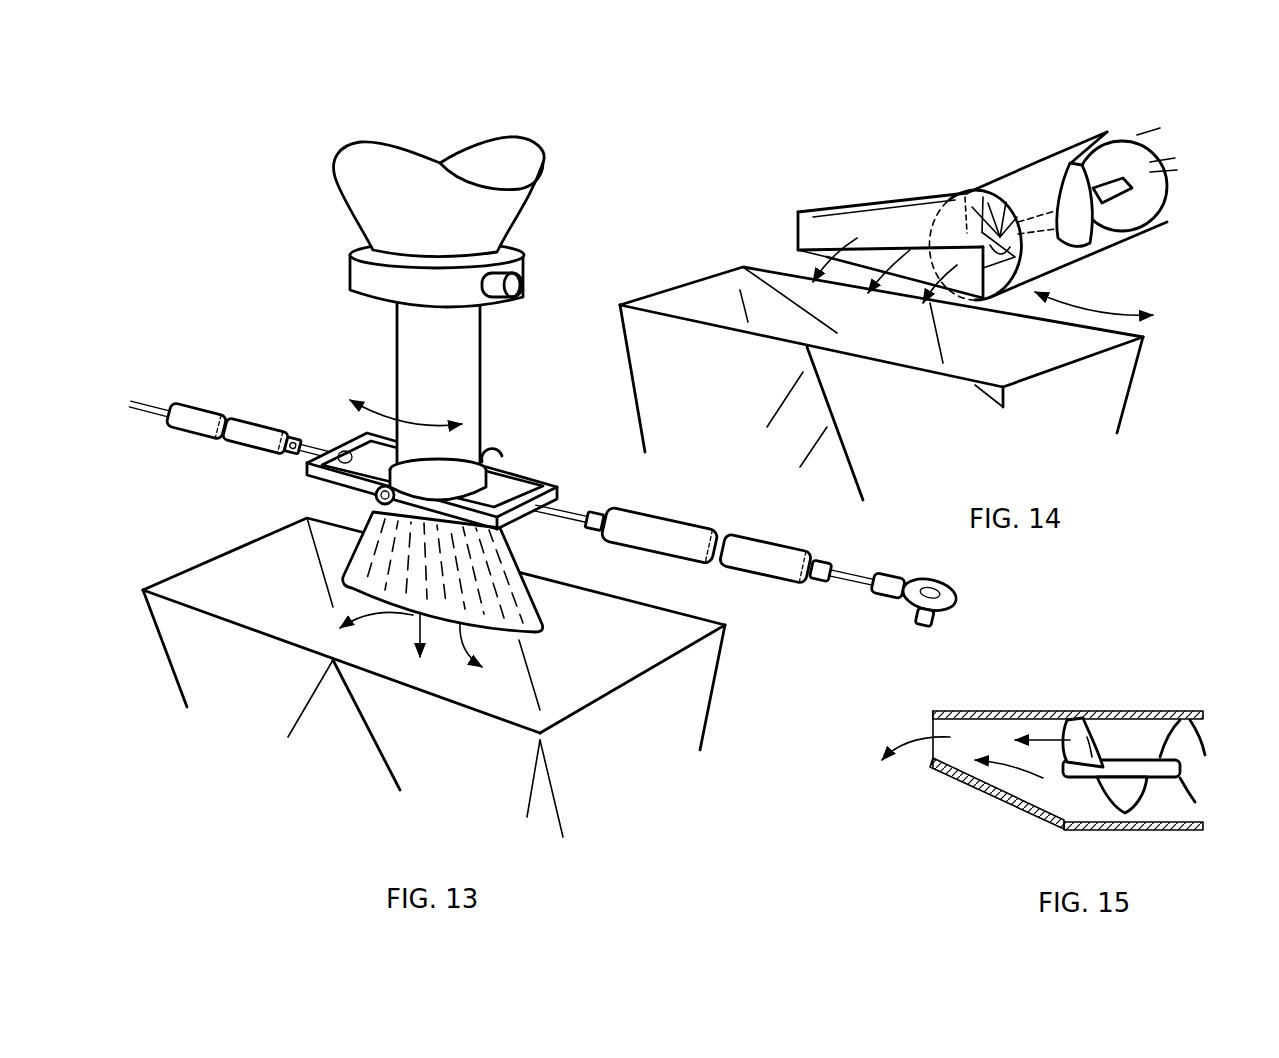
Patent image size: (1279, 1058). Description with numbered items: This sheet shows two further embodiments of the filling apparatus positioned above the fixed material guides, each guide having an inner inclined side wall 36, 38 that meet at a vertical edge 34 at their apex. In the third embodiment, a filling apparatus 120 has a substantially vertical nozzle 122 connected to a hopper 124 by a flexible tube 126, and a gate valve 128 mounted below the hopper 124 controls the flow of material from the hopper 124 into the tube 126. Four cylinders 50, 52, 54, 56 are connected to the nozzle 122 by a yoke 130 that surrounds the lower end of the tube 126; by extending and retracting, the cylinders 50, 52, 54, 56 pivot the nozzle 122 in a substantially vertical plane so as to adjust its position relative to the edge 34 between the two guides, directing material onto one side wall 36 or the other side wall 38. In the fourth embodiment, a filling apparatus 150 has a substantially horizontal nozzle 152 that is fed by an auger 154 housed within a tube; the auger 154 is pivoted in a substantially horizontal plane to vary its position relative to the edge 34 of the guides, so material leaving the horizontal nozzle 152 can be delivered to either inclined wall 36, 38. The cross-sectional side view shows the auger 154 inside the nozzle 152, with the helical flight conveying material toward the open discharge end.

In FIG. 13, the filling apparatus 120 is at (243, 337).
In FIG. 13, the nozzle 122 is at (350, 556).
In FIG. 13, the hopper 124 is at (350, 167).
In FIG. 13, the flexible tube 126 is at (410, 363).
In FIG. 13, the gate valve 128 is at (360, 273).
In FIG. 13, the yoke 130 is at (507, 470).
In FIG. 13, the cylinder 50 is at (187, 410).
In FIG. 13, the cylinder 52 is at (257, 430).
In FIG. 13, the cylinder 54 is at (663, 532).
In FIG. 13, the cylinder 56 is at (772, 558).
In FIG. 13, the vertical edge 34 is at (415, 617).
In FIG. 14, the vertical edge 34 is at (833, 333).
In FIG. 13, the inner inclined side wall 36 is at (213, 613).
In FIG. 14, the inner inclined side wall 36 is at (677, 318).
In FIG. 13, the inner inclined side wall 38 is at (653, 607).
In FIG. 14, the inner inclined side wall 38 is at (1003, 407).
In FIG. 14, the filling apparatus 150 is at (928, 160).
In FIG. 14, the nozzle 152 is at (807, 230).
In FIG. 15, the nozzle 152 is at (1003, 713).
In FIG. 14, the auger 154 is at (1113, 167).
In FIG. 15, the auger 154 is at (1133, 767).